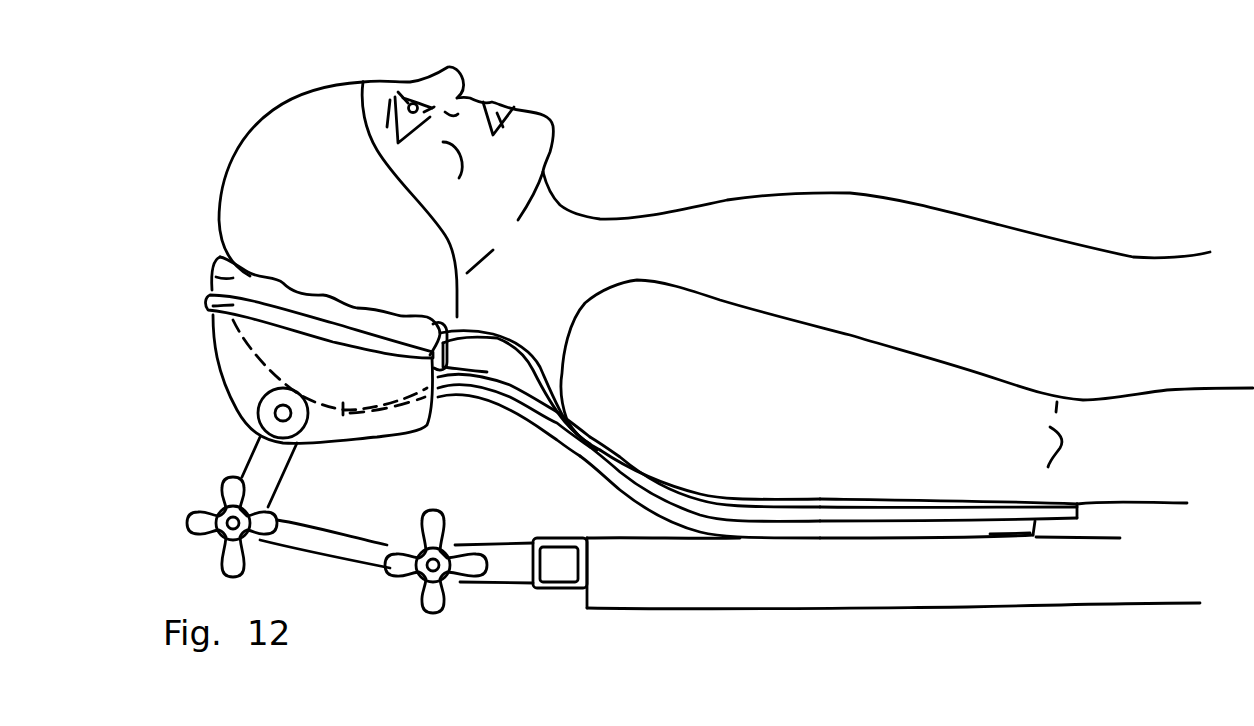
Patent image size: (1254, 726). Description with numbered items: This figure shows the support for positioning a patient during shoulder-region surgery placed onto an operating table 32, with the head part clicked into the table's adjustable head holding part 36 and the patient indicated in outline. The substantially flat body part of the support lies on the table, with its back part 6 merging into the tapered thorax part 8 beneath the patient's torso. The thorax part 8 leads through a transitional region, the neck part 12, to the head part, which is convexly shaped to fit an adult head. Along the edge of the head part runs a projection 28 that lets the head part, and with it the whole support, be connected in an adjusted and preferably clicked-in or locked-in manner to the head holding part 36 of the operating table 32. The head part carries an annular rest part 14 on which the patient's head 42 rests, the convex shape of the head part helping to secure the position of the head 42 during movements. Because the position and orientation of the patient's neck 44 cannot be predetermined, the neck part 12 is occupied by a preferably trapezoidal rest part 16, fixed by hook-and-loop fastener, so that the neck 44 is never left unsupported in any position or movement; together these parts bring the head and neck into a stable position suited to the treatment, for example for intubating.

The head 42 is at (317, 117).
The neck 44 is at (562, 238).
The rest part 14 is at (215, 262).
The projection 28 is at (207, 301).
The head holding part 36 is at (213, 416).
The rest part 16 is at (523, 372).
The neck part 12 is at (491, 418).
The thorax part 8 is at (595, 434).
The back part 6 is at (915, 486).
The operating table 32 is at (661, 588).